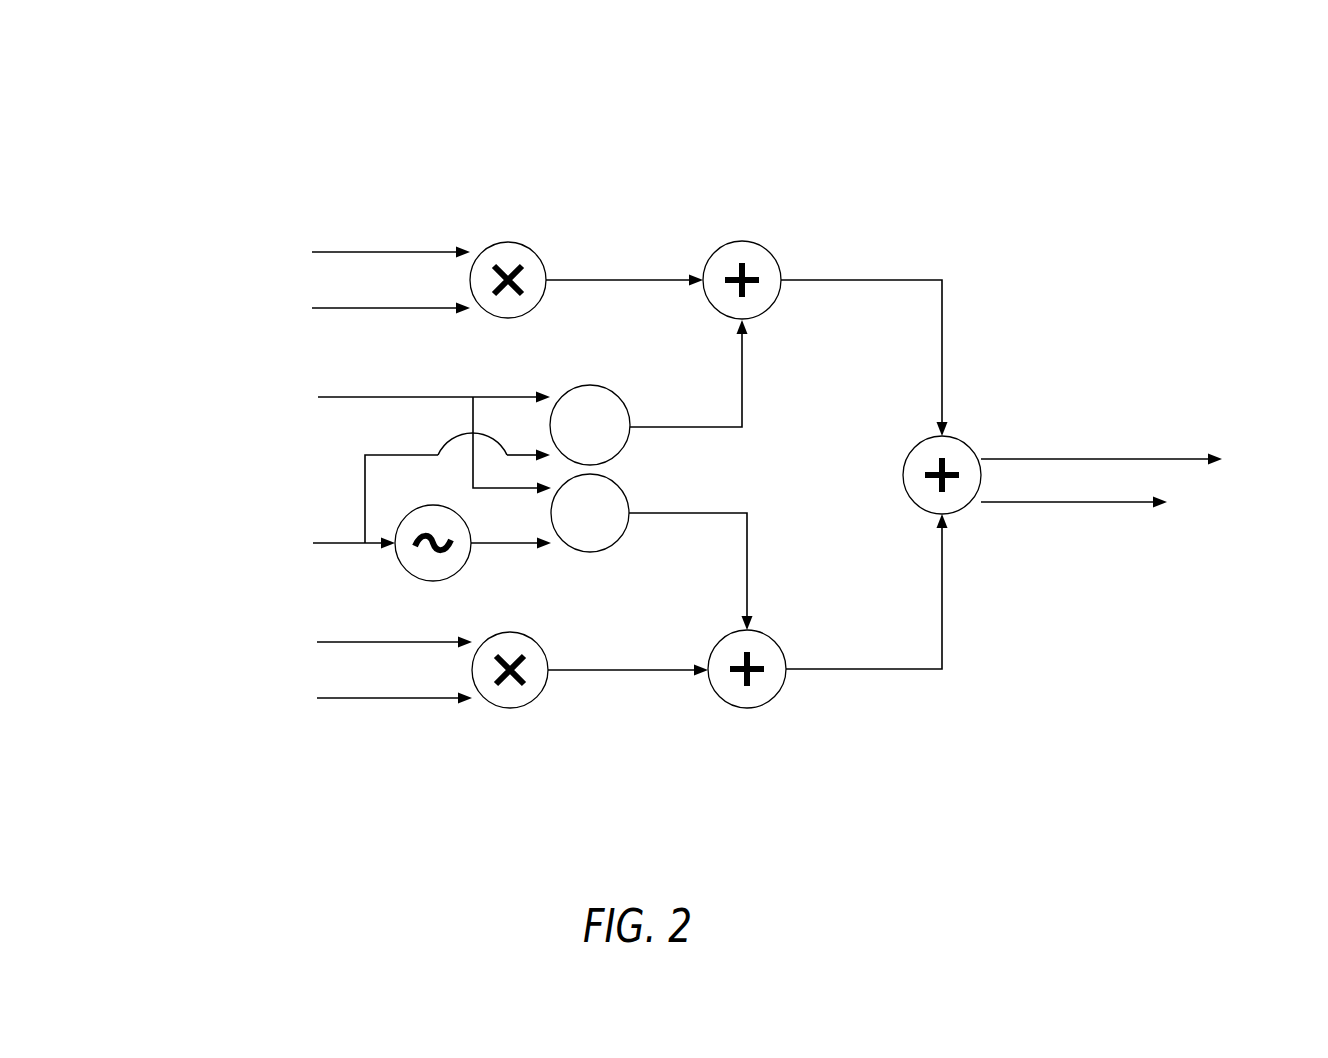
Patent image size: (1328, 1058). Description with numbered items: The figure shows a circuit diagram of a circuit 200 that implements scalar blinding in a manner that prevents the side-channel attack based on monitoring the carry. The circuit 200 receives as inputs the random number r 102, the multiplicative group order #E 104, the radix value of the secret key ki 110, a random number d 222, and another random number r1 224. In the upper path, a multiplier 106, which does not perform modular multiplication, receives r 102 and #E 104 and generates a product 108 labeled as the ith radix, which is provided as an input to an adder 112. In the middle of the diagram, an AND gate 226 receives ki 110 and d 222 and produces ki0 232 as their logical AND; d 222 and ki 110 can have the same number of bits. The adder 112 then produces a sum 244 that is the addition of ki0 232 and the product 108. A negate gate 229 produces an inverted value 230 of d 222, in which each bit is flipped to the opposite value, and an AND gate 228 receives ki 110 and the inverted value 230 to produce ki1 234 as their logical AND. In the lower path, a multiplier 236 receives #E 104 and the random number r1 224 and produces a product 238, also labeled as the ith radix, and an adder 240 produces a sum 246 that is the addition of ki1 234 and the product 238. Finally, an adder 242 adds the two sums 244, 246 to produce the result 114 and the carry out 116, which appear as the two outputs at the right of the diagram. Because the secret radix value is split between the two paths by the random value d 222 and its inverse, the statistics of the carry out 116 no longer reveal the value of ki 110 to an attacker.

The circuit 200 is at (1073, 108).
The random number r 102 is at (355, 252).
The multiplicative group order #E 104 is at (355, 308).
The multiplier 106 is at (522, 243).
The product 108 is at (597, 280).
The radix value of the secret key ki 110 is at (460, 397).
The adder 112 is at (748, 243).
The AND gate 226 is at (585, 387).
The AND gate 228 is at (618, 487).
The negate gate 229 is at (461, 510).
The random number d 222 is at (357, 545).
The random number r1 224 is at (362, 641).
The inverted value 230 is at (513, 545).
The ki0 232 is at (742, 415).
The ki1 234 is at (747, 565).
The multiplier 236 is at (545, 648).
The product 238 is at (613, 670).
The adder 240 is at (772, 640).
The adder 242 is at (952, 438).
The sum 244 is at (910, 280).
The sum 246 is at (941, 655).
The result 114 is at (1086, 505).
The carry out 116 is at (1178, 462).